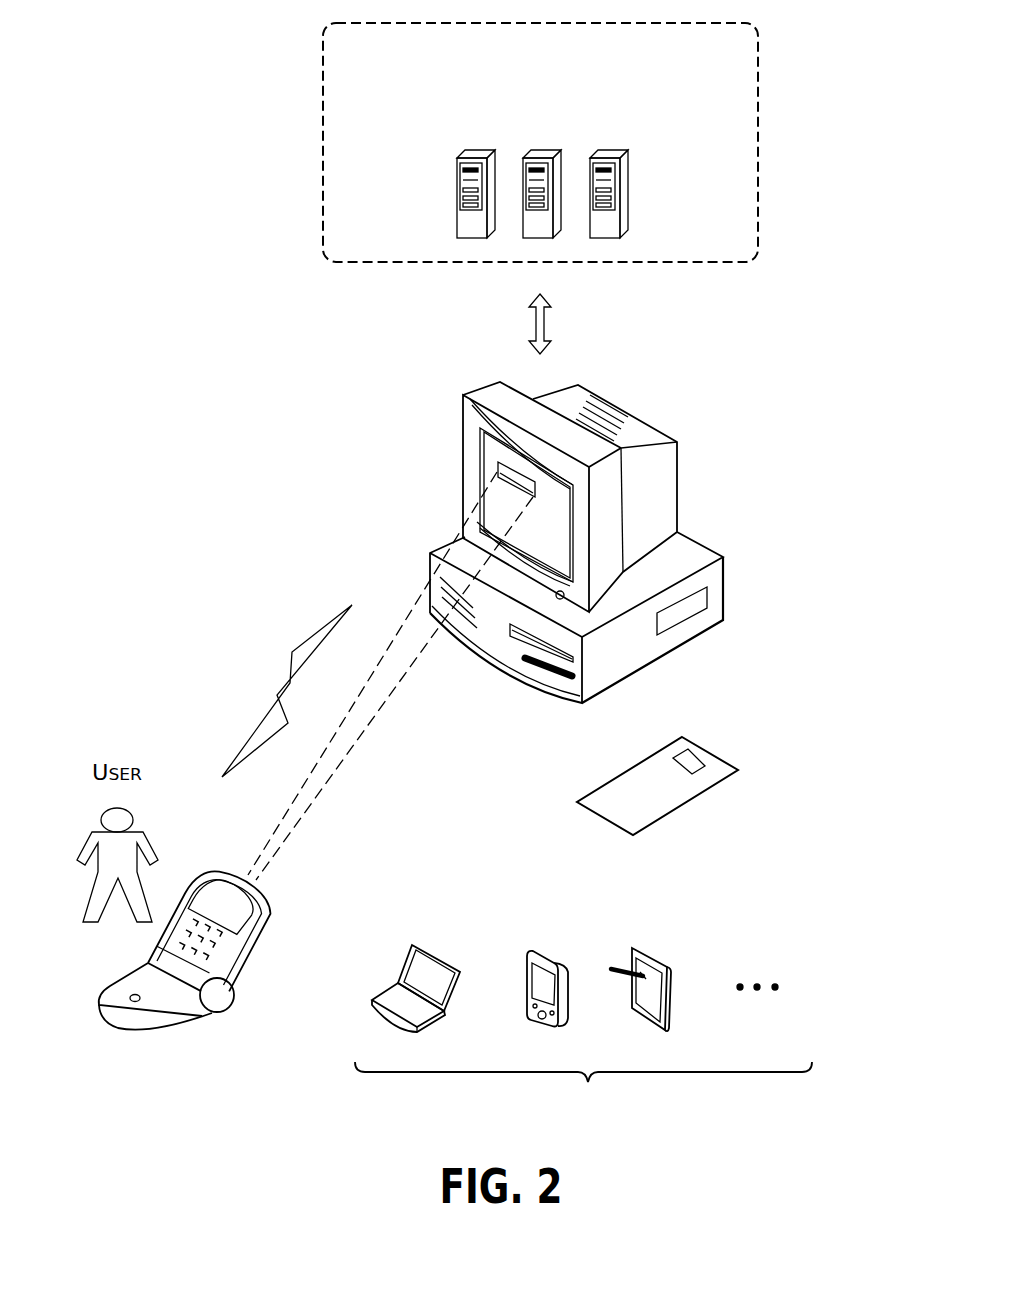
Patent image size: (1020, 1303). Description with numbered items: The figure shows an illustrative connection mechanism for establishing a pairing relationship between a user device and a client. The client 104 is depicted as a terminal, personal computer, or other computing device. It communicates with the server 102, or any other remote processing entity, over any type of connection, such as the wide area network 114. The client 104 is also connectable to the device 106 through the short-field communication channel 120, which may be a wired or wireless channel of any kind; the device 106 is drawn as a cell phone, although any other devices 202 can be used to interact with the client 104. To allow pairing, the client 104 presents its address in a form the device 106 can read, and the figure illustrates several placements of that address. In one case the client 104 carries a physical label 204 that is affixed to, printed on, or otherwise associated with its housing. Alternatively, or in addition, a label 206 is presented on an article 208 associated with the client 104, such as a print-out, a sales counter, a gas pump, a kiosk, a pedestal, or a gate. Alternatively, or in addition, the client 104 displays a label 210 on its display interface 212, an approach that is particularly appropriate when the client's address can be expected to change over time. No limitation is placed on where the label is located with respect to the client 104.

The server 102 is at (560, 120).
The wide area network 114 is at (545, 321).
The client 104 is at (725, 590).
The label 204 is at (677, 610).
The label 210 is at (517, 487).
The display interface 212 is at (455, 548).
The short-field communication channel 120 is at (289, 670).
The device 106 is at (180, 1018).
The article 208 is at (693, 800).
The label 206 is at (688, 763).
The other devices 202 is at (583, 1031).